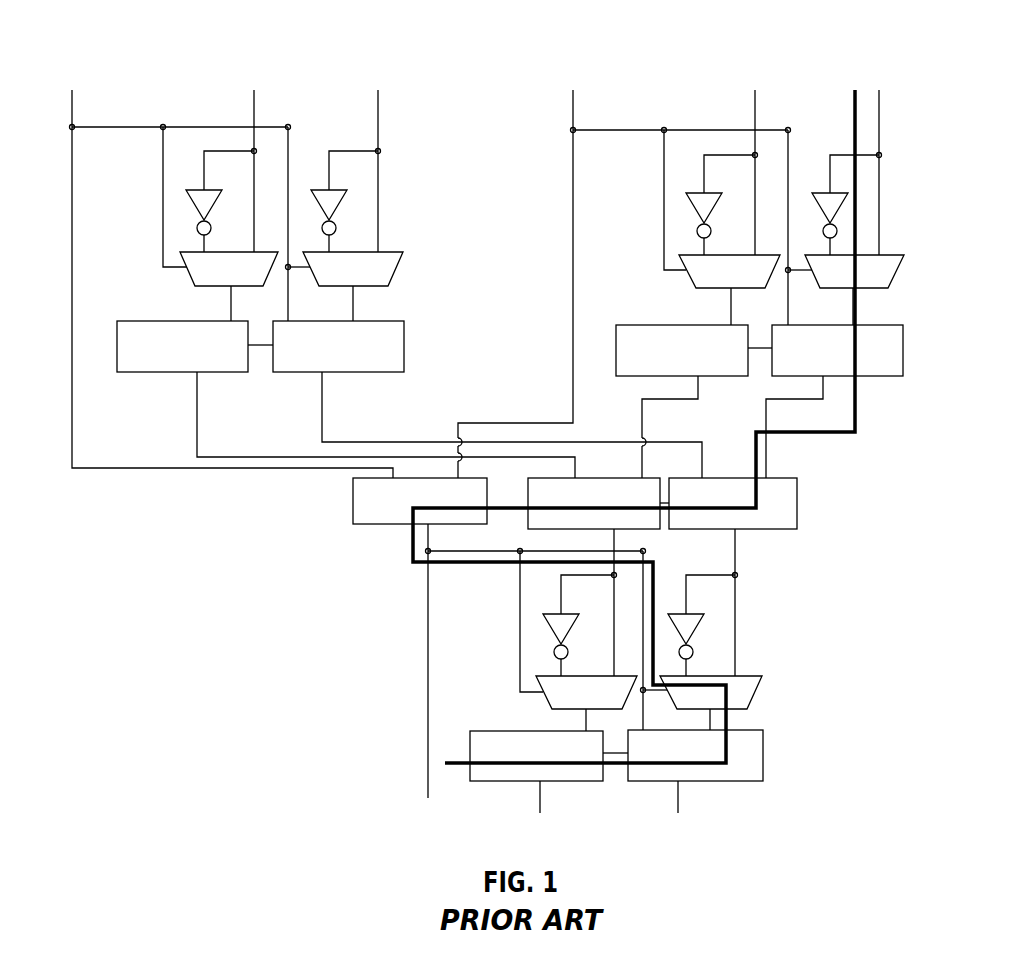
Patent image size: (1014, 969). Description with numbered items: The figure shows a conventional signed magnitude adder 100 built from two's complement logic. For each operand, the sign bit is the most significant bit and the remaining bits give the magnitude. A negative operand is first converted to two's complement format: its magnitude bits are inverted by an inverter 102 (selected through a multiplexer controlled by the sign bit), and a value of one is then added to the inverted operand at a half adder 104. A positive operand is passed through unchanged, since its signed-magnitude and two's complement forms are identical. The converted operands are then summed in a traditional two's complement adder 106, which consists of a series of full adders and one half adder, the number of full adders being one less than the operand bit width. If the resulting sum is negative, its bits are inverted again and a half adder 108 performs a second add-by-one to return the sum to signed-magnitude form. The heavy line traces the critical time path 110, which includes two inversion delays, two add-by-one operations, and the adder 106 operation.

The signed magnitude adder 100 is at (505, 45).
The inverter 102 is at (840, 213).
The half adder 104 is at (918, 320).
The two's complement adder 106 is at (803, 468).
The half adder 108 is at (782, 720).
The critical time path 110 is at (858, 425).